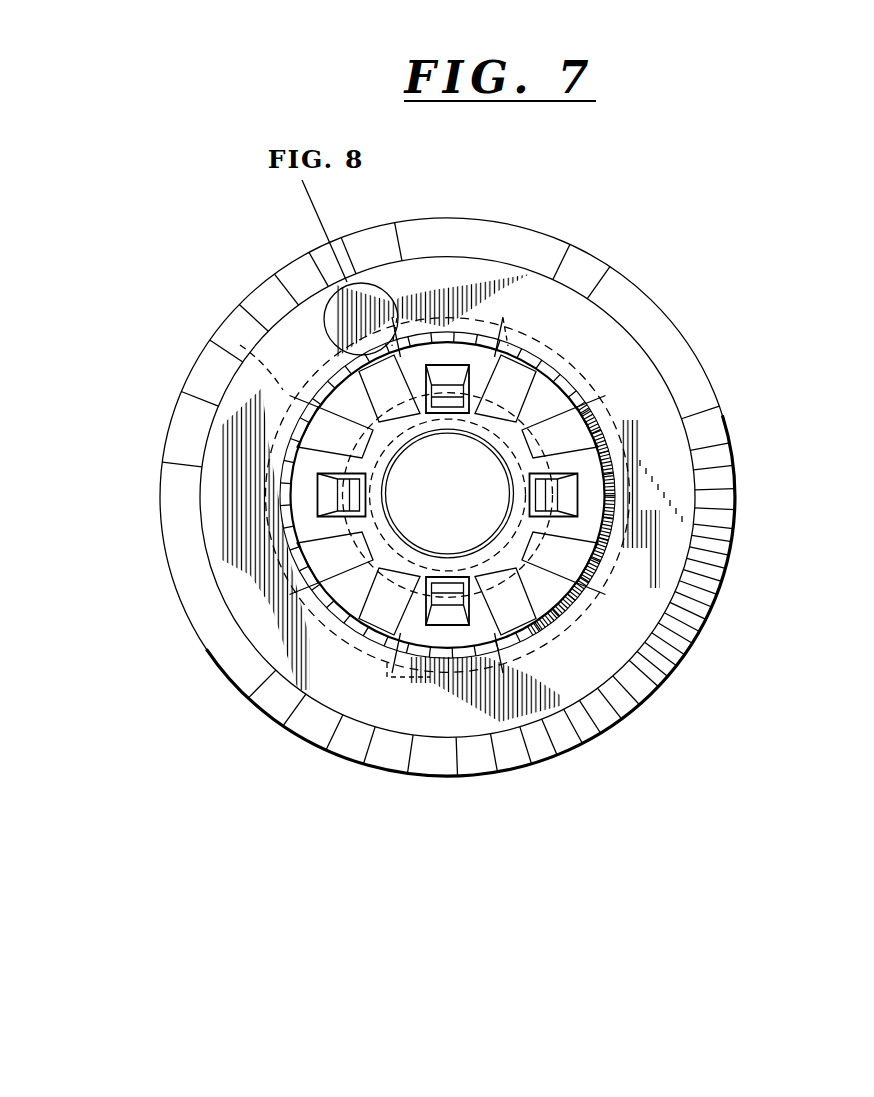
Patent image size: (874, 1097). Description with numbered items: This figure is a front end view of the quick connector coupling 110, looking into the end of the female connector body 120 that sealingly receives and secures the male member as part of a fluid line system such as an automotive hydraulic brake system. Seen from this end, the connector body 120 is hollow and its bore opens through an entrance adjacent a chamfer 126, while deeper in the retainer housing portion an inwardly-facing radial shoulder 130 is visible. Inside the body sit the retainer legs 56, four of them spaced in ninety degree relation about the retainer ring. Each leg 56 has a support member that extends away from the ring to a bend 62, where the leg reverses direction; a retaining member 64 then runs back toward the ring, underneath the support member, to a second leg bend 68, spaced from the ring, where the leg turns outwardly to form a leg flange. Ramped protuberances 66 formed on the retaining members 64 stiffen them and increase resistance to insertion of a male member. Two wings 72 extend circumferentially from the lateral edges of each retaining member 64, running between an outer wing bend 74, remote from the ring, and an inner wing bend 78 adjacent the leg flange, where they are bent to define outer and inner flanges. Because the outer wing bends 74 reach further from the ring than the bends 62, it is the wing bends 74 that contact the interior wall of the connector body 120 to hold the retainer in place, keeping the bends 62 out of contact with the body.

The legs 56 is at (432, 293).
The bends 62 is at (263, 487).
The retaining member 64 is at (485, 643).
The ramped protuberances 66 is at (433, 615).
The second leg bends 68 is at (603, 440).
The wings 72 is at (327, 560).
The outer wing bend 74 is at (240, 345).
The inner wing bend 78 is at (372, 519).
The quick connector coupling 110 is at (728, 790).
The female connector body 120 is at (553, 760).
The chamfer 126 is at (550, 418).
The inwardly-facing radial shoulder 130 is at (318, 370).